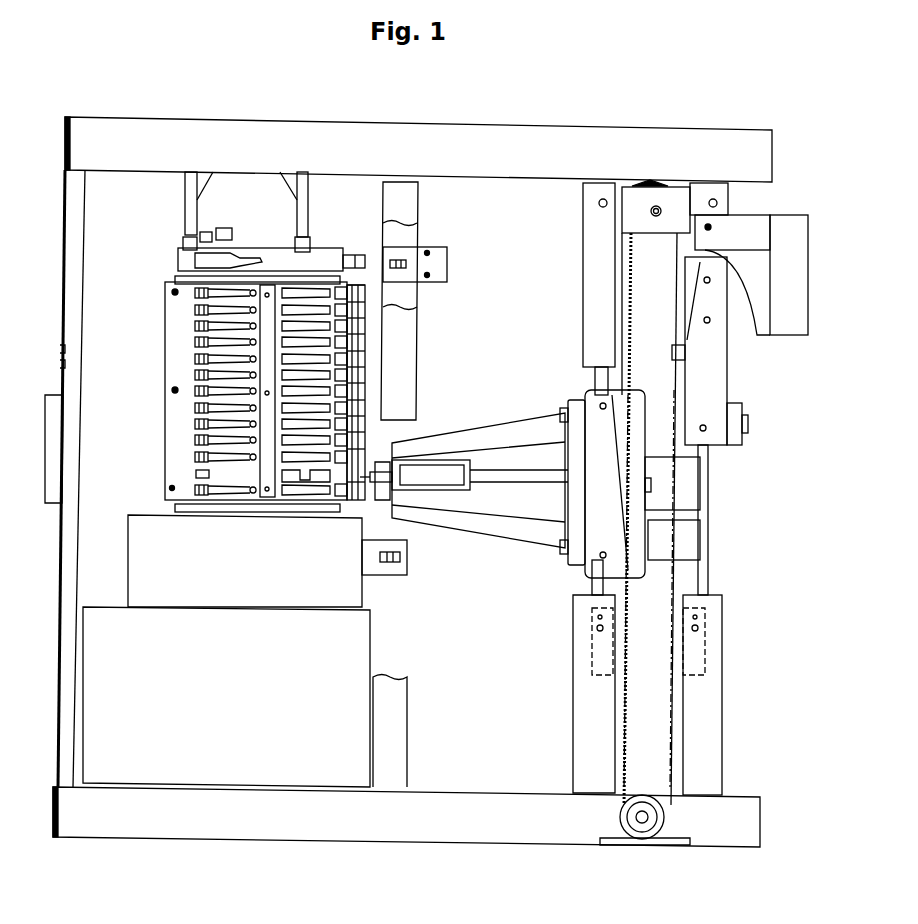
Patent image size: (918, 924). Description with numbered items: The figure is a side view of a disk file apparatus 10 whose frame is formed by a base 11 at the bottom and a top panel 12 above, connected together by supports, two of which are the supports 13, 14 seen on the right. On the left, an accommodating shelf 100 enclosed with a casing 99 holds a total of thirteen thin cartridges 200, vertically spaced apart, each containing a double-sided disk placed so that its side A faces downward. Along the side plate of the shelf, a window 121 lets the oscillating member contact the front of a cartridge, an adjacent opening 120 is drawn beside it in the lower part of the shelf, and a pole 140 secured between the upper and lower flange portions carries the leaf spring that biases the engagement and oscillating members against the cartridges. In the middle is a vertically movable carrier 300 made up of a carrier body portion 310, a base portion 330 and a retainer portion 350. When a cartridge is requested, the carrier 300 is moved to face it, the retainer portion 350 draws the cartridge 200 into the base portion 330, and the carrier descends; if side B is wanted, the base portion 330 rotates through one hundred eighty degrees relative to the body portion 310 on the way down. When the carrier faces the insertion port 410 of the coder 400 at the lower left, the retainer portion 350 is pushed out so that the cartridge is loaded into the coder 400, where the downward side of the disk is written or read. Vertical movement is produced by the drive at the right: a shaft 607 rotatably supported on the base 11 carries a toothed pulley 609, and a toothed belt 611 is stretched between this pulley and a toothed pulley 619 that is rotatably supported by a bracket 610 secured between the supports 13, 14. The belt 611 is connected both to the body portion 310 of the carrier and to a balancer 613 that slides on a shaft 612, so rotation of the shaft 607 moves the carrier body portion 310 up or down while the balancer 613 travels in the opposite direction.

The disk file apparatus 10 is at (489, 124).
The base 11 is at (302, 829).
The top panel 12 is at (386, 162).
The support 13 is at (705, 750).
The support 14 is at (580, 750).
The casing 99 is at (76, 426).
The accommodating shelf 100 is at (160, 368).
The tool holder 120 is at (195, 474).
The window 121 is at (322, 496).
The pole 140 is at (263, 512).
The cartridge 200 is at (372, 292).
The carrier 300 is at (530, 463).
The carrier body portion 310 is at (608, 452).
The base portion 330 is at (532, 525).
The retainer portion 350 is at (382, 486).
The coder 400 is at (253, 597).
The insertion port 410 is at (361, 558).
The shaft 607 is at (640, 822).
The toothed pulley 609 is at (655, 832).
The bracket 610 is at (641, 195).
The toothed belt 611 is at (690, 385).
The shaft 612 is at (710, 514).
The balancer 613 is at (720, 386).
The toothed pulley 619 is at (672, 183).